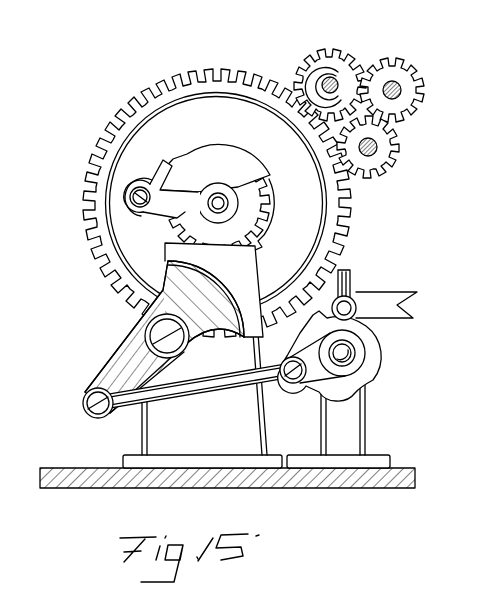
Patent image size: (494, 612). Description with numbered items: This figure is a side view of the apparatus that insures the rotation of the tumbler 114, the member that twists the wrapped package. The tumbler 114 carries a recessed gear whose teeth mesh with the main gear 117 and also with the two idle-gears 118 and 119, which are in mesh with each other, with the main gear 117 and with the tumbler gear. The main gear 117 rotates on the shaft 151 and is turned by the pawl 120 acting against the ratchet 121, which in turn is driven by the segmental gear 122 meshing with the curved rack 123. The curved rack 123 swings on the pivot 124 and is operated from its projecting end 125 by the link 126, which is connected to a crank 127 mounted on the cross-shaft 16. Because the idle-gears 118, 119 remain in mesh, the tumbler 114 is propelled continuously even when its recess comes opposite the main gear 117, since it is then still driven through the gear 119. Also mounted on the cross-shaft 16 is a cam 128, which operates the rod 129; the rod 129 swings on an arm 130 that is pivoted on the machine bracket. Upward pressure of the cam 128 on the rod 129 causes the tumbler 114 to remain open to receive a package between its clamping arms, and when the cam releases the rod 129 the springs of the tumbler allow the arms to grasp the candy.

The tumbler 114 is at (340, 66).
The idle-gear 119 is at (408, 78).
The idle-gear 118 is at (390, 150).
The main gear 117 is at (347, 238).
The pawl 120 is at (156, 172).
The ratchet 121 is at (233, 156).
The shaft 151 is at (216, 197).
The segmental gear 122 is at (255, 212).
The curved rack 123 is at (232, 322).
The pivot 124 is at (150, 331).
The projecting end 125 is at (98, 416).
The link 126 is at (226, 385).
The crank 127 is at (316, 375).
The cam 128 is at (342, 399).
The cross-shaft 16 is at (356, 353).
The rod 129 is at (353, 283).
The arm 130 is at (406, 310).